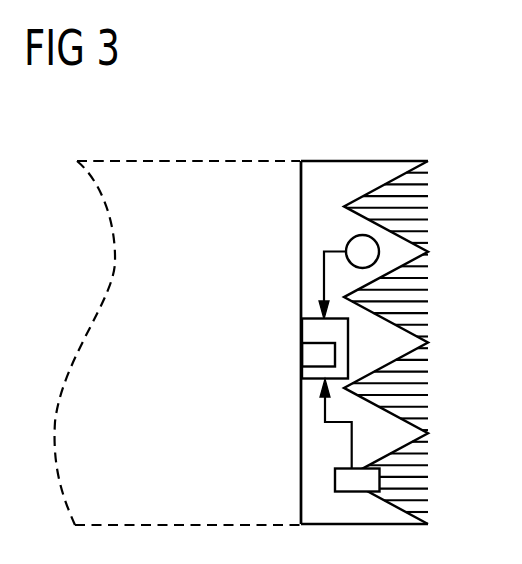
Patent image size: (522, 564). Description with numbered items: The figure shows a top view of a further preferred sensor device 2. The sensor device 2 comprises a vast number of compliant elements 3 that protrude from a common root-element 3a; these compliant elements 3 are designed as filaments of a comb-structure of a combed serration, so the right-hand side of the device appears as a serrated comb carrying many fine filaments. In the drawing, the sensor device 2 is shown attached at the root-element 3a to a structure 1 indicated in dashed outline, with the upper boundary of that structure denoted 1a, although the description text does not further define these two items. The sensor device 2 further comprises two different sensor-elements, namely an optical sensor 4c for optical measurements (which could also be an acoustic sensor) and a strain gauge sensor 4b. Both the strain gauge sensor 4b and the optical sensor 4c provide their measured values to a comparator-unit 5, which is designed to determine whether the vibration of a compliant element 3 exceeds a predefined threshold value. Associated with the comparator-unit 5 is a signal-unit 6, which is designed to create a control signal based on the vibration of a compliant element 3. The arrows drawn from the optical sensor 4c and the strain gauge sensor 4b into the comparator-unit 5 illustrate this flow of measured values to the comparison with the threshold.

The component / body to be protected 1 is at (86, 245).
The surface of the component 1a is at (199, 173).
The sensor device 2 is at (393, 128).
The compliant elements 3 is at (457, 302).
The root-element 3a is at (327, 173).
The strain gauge sensor 4b is at (338, 479).
The optical sensor 4c is at (348, 242).
The comparator-unit 5 is at (304, 324).
The signal-unit 6 is at (304, 356).